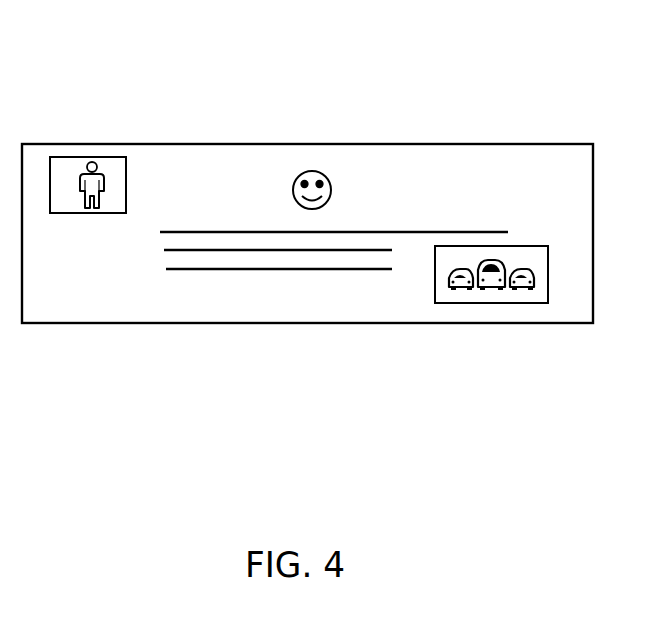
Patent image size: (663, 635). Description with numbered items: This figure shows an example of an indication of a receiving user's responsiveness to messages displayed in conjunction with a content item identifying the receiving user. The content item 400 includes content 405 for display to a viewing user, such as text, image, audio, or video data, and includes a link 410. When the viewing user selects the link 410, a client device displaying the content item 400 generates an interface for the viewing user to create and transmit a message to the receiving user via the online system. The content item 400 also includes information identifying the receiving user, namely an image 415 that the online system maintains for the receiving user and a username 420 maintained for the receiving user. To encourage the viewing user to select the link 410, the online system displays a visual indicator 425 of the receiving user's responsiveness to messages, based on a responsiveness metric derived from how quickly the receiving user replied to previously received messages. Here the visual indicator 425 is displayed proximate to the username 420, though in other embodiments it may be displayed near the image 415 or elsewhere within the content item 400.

The content item 400 is at (485, 141).
The content 405 is at (402, 296).
The link 410 is at (266, 308).
The image 415 is at (93, 151).
The username 420 is at (210, 184).
The visual indicator 425 is at (312, 169).